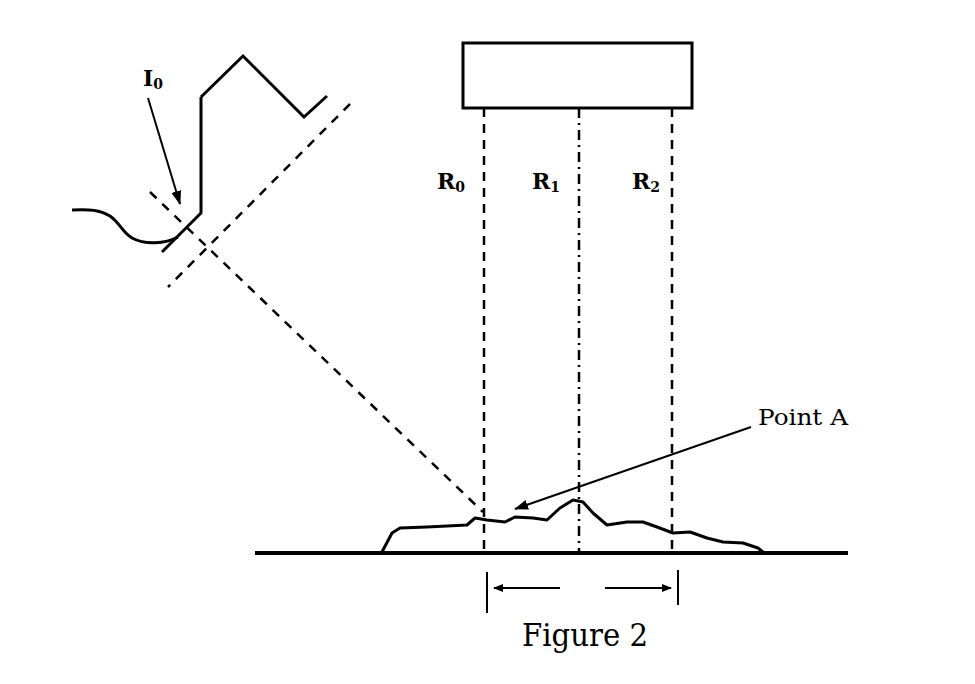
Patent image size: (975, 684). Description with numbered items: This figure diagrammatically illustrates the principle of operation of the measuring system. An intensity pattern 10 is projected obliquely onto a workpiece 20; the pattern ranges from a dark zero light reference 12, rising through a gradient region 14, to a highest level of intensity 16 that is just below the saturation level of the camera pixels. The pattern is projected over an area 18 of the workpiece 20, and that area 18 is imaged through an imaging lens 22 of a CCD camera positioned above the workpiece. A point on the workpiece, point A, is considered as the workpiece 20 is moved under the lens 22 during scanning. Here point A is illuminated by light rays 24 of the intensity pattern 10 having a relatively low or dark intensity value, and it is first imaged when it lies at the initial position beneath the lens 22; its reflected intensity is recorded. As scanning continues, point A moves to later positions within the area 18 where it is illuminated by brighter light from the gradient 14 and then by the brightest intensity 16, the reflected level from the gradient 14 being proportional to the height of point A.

The intensity pattern 10 is at (108, 252).
The zero light reference 12 is at (104, 222).
The gradient region 14 is at (216, 157).
The highest level of intensity 16 is at (217, 78).
The area 18 is at (582, 591).
The workpiece 20 is at (723, 540).
The imaging lens 22 is at (745, 82).
The light rays 24 is at (315, 350).